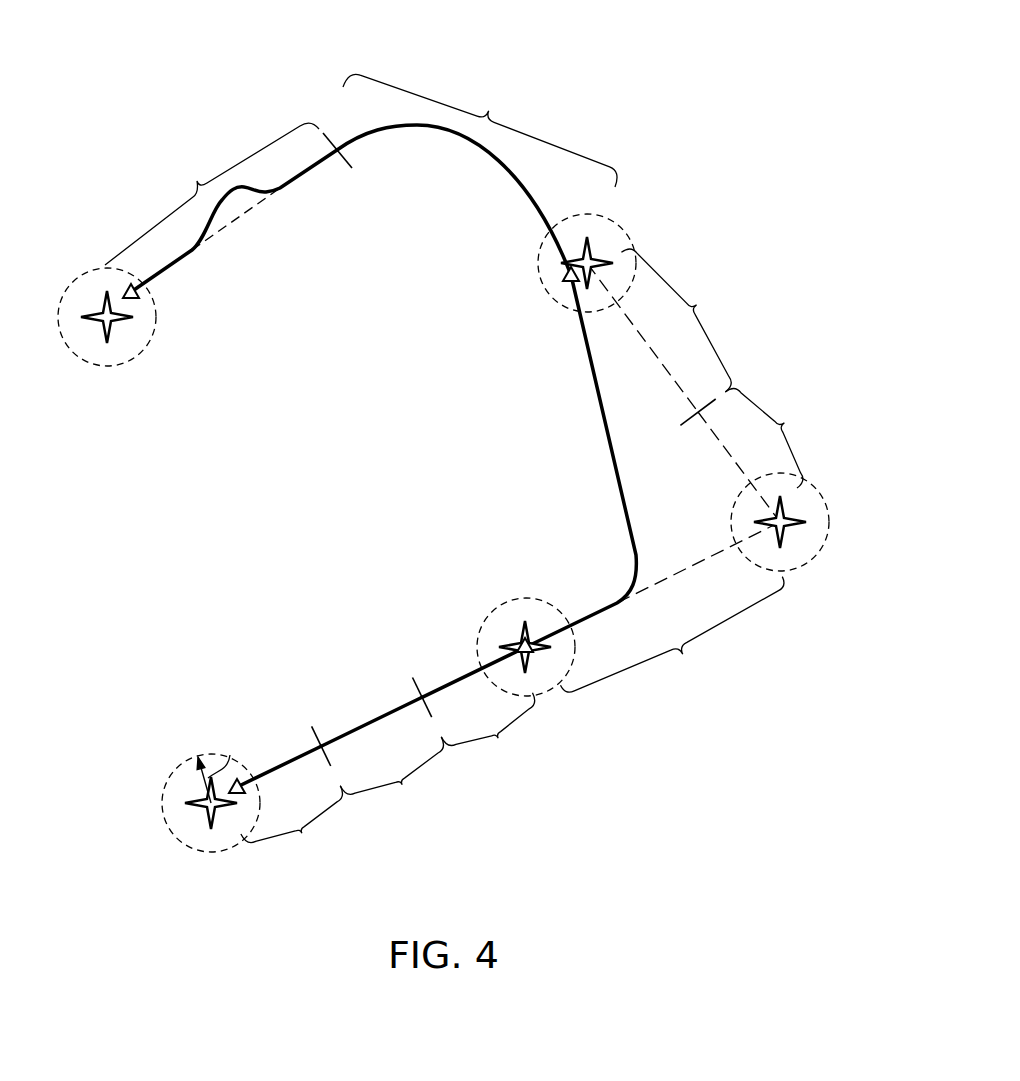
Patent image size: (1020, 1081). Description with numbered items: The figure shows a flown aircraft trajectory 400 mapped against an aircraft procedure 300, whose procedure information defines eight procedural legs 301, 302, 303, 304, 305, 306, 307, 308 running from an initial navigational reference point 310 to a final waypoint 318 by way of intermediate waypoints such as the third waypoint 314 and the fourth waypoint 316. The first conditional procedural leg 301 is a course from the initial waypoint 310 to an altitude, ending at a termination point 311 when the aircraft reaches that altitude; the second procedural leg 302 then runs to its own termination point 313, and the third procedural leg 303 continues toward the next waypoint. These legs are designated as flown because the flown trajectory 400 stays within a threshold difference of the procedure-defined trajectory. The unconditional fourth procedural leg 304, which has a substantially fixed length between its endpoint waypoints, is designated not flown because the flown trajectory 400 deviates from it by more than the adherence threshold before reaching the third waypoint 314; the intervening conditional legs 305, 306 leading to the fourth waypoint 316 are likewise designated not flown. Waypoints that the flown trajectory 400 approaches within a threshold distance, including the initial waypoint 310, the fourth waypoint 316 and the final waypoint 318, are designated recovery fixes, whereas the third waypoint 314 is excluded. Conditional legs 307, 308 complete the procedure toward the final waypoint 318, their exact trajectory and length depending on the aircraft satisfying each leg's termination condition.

The aircraft procedure 300 is at (772, 112).
The first conditional procedural leg 301 is at (290, 807).
The second procedural leg 302 is at (382, 759).
The third procedural leg 303 is at (478, 711).
The fourth procedural leg 304 is at (672, 607).
The fifth procedural leg 305 is at (759, 455).
The sixth procedural leg 306 is at (670, 330).
The seventh procedural leg 307 is at (470, 174).
The eighth procedural leg 308 is at (221, 207).
The initial navigational reference point 310 is at (197, 793).
The termination point of the first conditional procedural leg 311 is at (310, 740).
The termination point for the second procedural leg 313 is at (412, 690).
The third waypoint 314 is at (517, 640).
The fourth waypoint 316 is at (600, 243).
The final waypoint 318 is at (103, 293).
The flown aircraft trajectory 400 is at (603, 423).